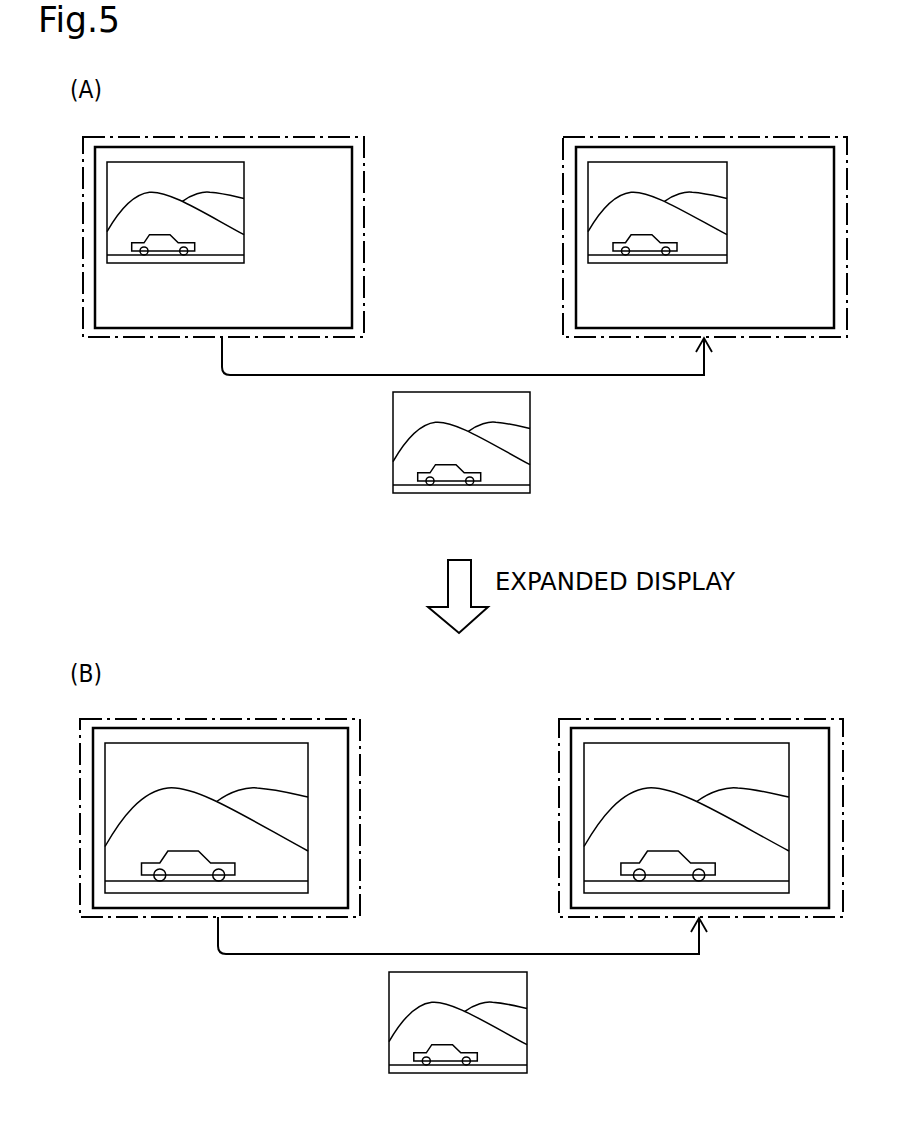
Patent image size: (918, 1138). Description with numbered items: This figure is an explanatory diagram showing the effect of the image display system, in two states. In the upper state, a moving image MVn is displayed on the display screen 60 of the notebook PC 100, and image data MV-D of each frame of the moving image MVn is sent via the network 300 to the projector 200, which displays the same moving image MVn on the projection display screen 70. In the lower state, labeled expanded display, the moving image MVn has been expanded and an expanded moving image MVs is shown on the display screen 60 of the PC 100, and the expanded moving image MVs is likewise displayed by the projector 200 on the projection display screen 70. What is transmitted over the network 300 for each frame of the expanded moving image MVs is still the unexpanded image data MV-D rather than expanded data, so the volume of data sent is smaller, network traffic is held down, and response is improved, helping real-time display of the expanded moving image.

The notebook PC 100 is at (365, 197).
The display screen 60 is at (352, 235).
The projector 200 is at (563, 197).
The projection display screen 70 is at (576, 235).
The network 300 is at (635, 376).
The moving image MVn is at (244, 212).
The expanded moving image MVs is at (308, 866).
The image data MV-D is at (530, 474).